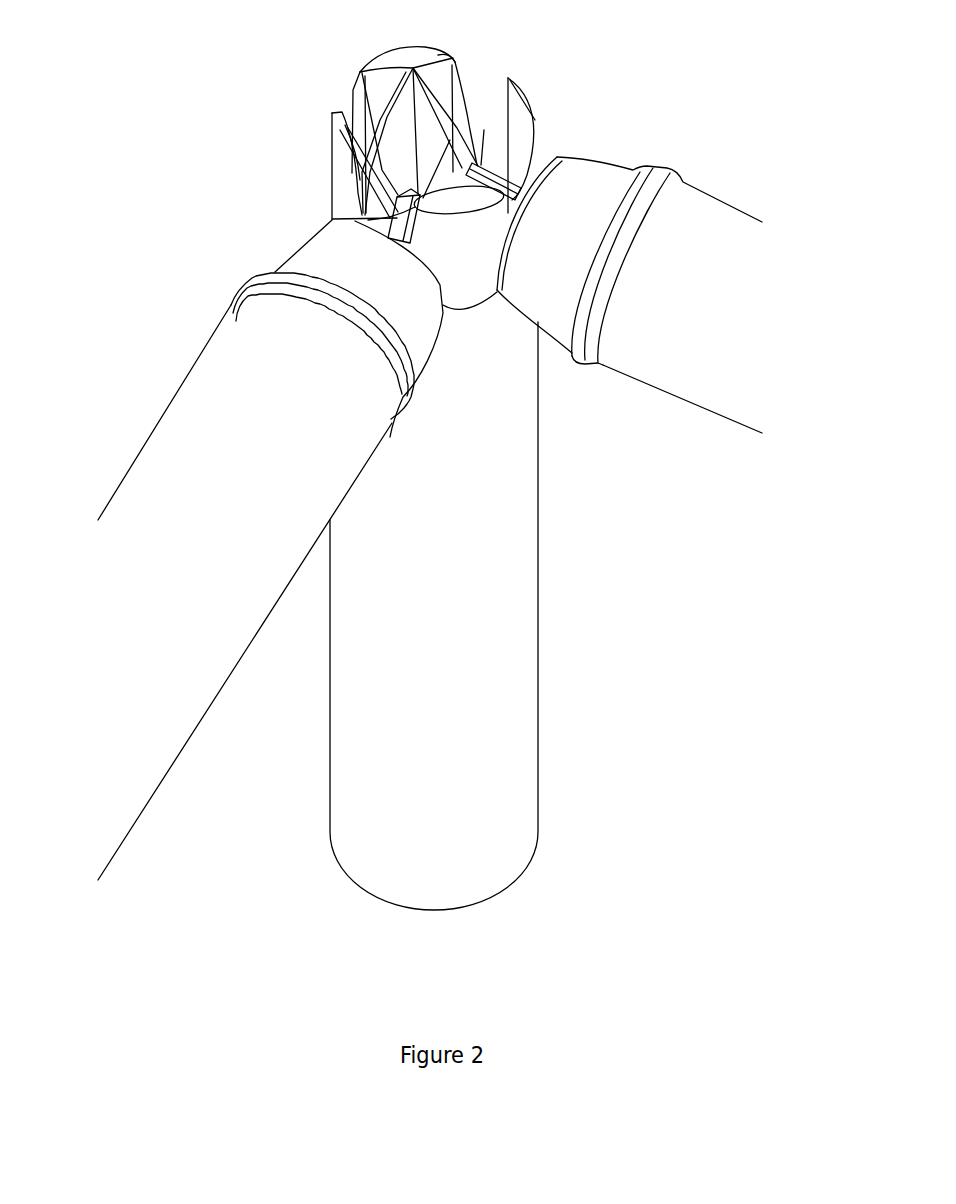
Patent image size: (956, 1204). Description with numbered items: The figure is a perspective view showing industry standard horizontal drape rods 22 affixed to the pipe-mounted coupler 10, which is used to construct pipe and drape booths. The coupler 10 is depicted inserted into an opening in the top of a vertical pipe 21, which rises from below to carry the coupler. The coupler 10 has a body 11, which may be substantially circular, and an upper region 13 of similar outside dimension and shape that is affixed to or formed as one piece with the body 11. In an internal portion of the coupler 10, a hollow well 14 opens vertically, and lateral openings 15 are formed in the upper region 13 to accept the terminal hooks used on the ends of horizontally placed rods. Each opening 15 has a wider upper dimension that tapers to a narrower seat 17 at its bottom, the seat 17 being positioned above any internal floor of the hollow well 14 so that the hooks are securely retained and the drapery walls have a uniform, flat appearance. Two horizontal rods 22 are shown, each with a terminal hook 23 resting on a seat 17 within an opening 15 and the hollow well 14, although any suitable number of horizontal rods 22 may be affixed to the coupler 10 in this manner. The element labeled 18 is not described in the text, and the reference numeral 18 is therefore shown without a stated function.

The pipe-mounted coupler 10 is at (371, 112).
The body 11 is at (436, 245).
The upper region 13 is at (343, 195).
The hollow well 14 is at (417, 125).
The opening 15 is at (350, 124).
The seat 17 is at (470, 147).
The petal 18 is at (415, 55).
The vertical pipe 21 is at (390, 799).
The horizontal drape rod 22 is at (204, 398).
The terminal hook 23 is at (393, 218).